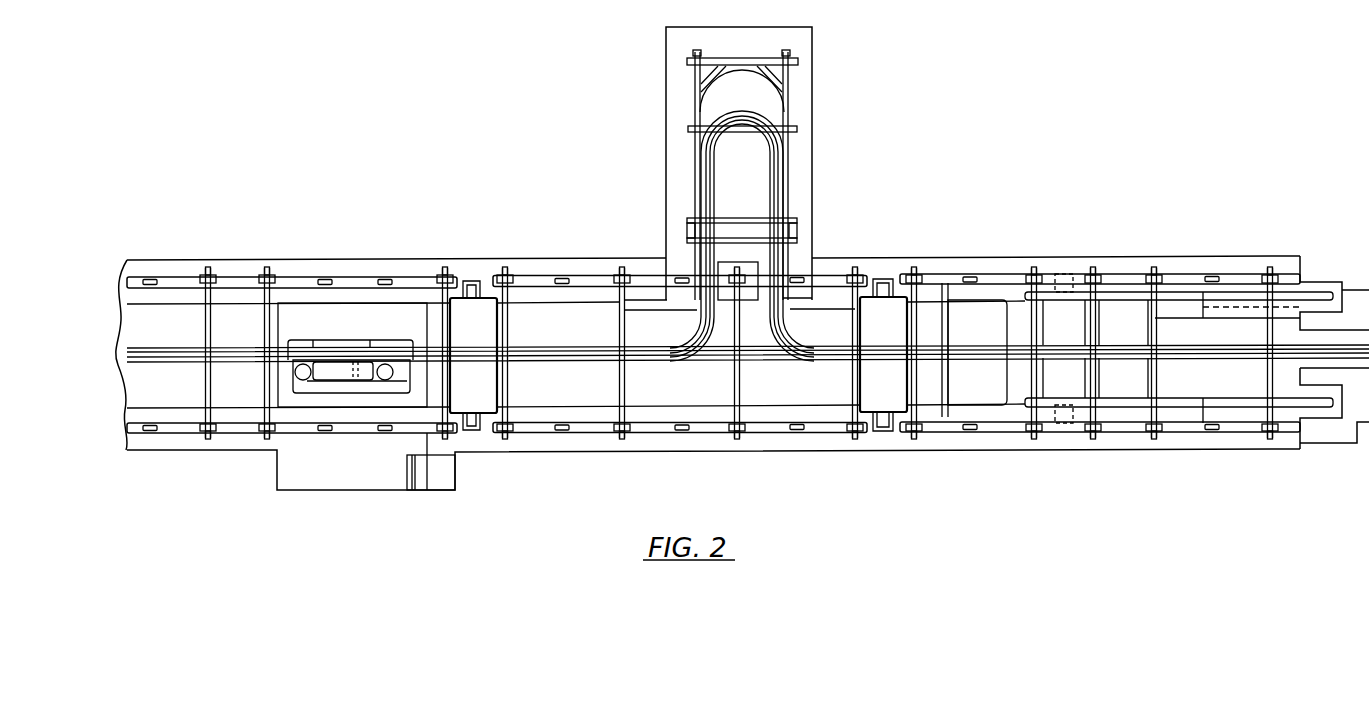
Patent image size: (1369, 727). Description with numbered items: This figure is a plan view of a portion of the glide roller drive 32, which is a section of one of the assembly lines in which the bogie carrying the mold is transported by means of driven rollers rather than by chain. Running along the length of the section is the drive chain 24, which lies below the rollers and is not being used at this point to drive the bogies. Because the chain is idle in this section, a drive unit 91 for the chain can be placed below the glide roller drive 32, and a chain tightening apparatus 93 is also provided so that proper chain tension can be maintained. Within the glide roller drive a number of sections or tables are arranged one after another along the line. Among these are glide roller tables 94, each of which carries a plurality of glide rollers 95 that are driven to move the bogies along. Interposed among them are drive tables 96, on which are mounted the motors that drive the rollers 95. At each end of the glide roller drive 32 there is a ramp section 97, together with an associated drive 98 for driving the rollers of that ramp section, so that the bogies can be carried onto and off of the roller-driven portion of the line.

The drive chain 24 is at (153, 362).
The glide roller drive 32 is at (1000, 184).
The drive unit 91 is at (346, 338).
The chain tightening apparatus 93 is at (800, 117).
The glide roller tables 94 is at (240, 257).
The glide rollers 95 is at (152, 277).
The drive tables 96 is at (478, 283).
The ramp section 97 is at (1133, 263).
The drive 98 is at (1062, 268).